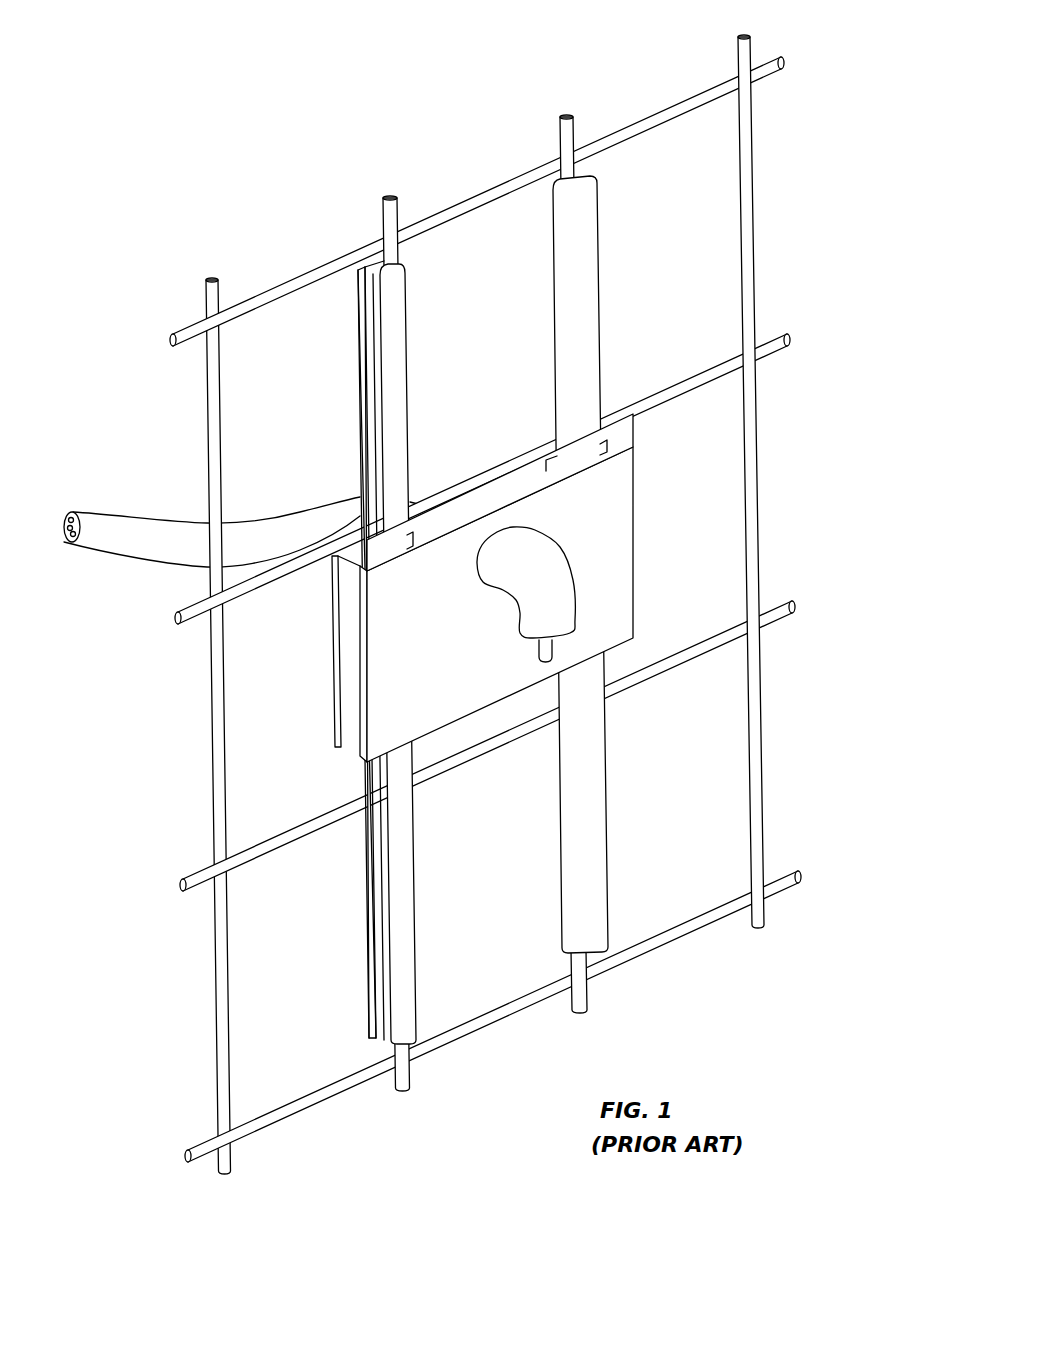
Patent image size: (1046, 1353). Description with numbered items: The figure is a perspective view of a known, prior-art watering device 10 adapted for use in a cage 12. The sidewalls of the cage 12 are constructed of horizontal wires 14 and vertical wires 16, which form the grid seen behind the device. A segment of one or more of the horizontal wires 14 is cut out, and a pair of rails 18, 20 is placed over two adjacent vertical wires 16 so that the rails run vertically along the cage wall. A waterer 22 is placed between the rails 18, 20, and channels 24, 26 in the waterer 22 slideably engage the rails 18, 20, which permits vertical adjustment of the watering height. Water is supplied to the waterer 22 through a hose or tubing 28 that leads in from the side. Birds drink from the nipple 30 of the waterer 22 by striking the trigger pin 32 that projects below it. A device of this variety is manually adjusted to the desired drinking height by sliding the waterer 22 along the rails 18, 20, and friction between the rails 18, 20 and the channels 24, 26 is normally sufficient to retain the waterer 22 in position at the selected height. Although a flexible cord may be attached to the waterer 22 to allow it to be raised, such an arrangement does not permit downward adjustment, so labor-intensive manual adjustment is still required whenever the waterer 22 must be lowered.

The watering device 10 is at (452, 597).
The cage 12 is at (452, 604).
The horizontal wires 14 is at (770, 346).
The vertical wires 16 is at (500, 604).
The rail 18 is at (395, 334).
The rail 20 is at (576, 374).
The waterer 22 is at (513, 588).
The channel 24 is at (350, 578).
The channel 26 is at (606, 443).
The hose or tubing 28 is at (128, 527).
The nipple 30 is at (534, 550).
The trigger pin 32 is at (540, 657).